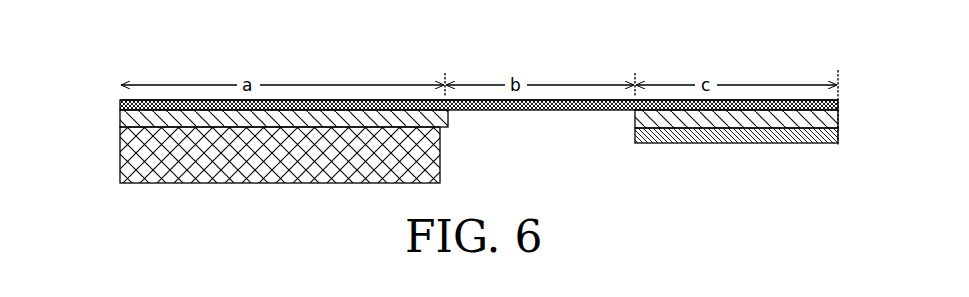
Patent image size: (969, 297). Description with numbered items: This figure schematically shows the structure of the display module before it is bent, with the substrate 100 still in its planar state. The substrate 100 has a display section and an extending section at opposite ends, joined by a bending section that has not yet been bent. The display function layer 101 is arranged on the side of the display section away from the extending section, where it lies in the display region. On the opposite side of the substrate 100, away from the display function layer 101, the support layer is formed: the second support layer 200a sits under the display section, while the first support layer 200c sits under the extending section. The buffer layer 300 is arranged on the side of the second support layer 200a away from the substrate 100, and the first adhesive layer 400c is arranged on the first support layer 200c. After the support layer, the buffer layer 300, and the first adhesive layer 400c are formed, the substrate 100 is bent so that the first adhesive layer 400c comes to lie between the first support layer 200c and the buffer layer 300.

The substrate 100 is at (121, 103).
The display function layer 101 is at (123, 100).
The second support layer 200a is at (143, 121).
The buffer layer 300 is at (143, 155).
The first adhesive layer 400c is at (825, 120).
The first support layer 200c is at (818, 138).